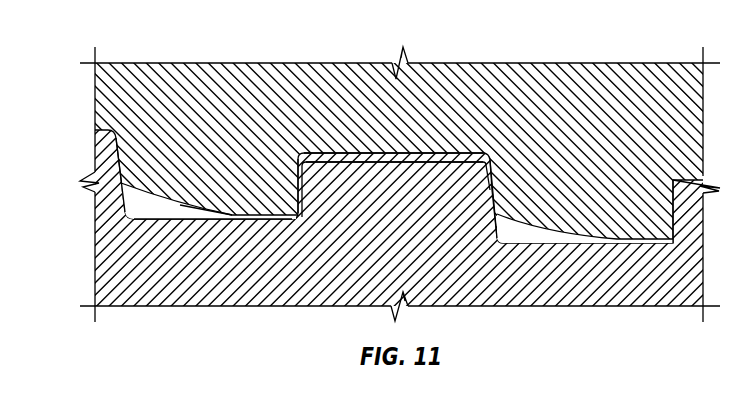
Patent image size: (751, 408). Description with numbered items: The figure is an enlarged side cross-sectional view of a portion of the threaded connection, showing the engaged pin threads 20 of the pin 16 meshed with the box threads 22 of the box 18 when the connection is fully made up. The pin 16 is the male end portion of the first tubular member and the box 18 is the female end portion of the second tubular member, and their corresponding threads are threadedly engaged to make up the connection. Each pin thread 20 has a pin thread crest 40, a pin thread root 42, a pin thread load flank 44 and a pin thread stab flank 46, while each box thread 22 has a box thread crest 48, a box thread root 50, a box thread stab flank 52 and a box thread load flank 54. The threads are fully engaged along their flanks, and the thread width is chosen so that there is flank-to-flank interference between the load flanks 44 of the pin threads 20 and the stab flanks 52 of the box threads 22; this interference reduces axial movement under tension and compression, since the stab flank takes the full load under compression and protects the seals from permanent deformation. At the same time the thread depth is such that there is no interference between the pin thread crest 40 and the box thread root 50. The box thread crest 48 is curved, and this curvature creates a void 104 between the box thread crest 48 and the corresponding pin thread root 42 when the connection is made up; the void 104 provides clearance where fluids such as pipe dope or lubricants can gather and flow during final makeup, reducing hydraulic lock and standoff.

The pin 16 is at (405, 279).
The box 18 is at (405, 119).
The pin threads 20 is at (433, 207).
The box threads 22 is at (212, 190).
The pin thread crest 40 is at (370, 160).
The pin thread root 42 is at (165, 224).
The pin thread load flank 44 is at (301, 200).
The pin thread stab flank 46 is at (491, 201).
The box thread crest 48 is at (208, 214).
The box thread root 50 is at (434, 149).
The box thread stab flank 52 is at (490, 184).
The box thread load flank 54 is at (303, 185).
The void 104 is at (138, 207).